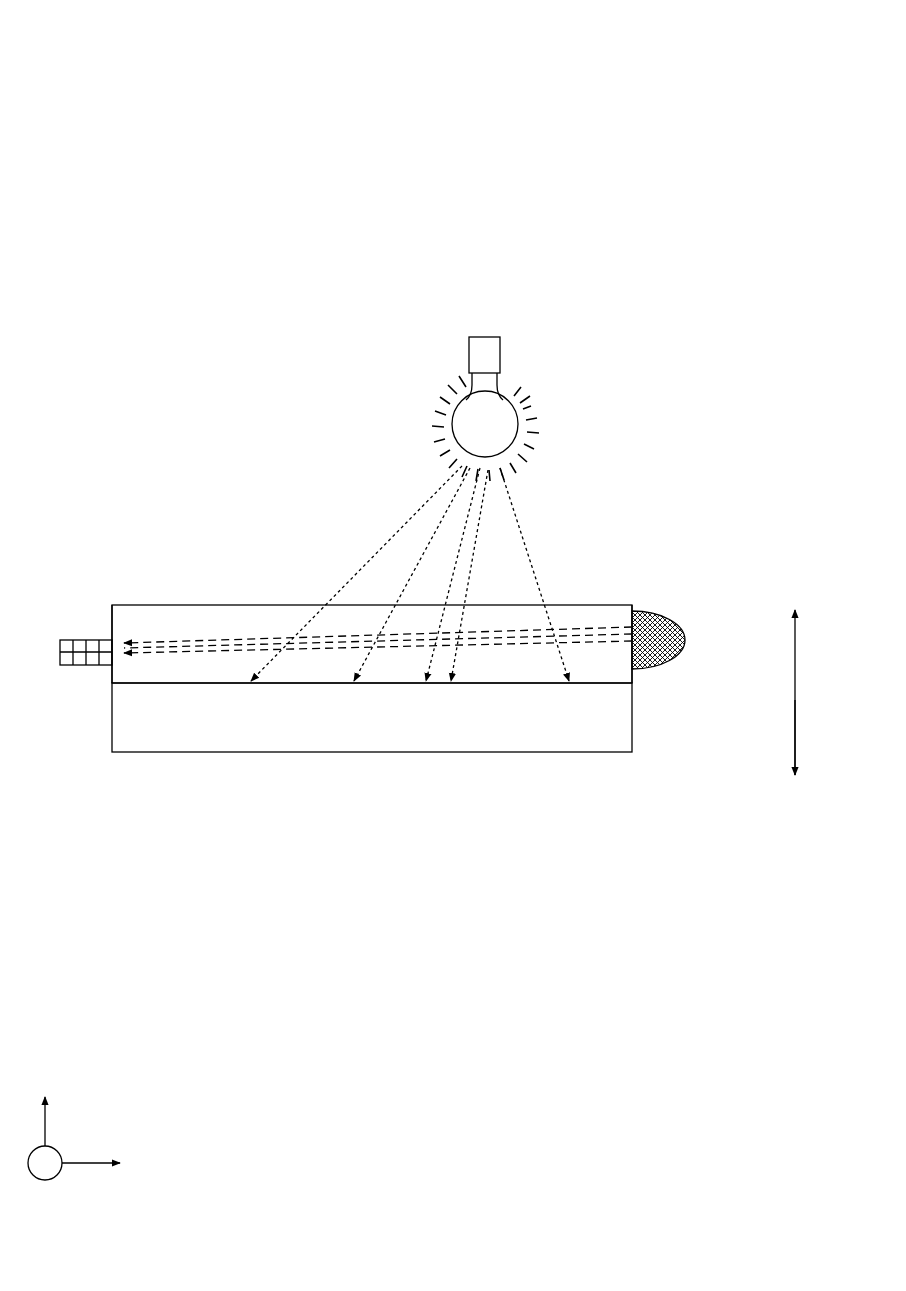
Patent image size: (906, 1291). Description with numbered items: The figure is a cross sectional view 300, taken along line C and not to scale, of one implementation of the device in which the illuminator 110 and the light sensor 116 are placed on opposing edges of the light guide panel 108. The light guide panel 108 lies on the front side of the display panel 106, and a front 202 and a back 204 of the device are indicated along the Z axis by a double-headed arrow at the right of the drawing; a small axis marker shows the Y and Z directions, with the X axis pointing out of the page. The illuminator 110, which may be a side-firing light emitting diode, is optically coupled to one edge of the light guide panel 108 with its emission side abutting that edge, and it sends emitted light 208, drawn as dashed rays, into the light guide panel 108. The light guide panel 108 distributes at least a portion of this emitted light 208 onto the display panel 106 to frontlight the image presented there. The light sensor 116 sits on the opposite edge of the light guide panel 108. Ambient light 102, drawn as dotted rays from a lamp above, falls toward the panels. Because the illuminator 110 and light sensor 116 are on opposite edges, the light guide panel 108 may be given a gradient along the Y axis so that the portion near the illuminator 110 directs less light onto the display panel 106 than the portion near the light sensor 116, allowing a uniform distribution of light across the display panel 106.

The cross sectional view 300 is at (713, 100).
The ambient light 102 is at (505, 505).
The display panel 106 is at (266, 730).
The light guide panel 108 is at (132, 617).
The illuminator 110 is at (660, 671).
The light sensor 116 is at (88, 666).
The front 202 is at (794, 666).
The back 204 is at (795, 763).
The emitted light 208 is at (578, 625).